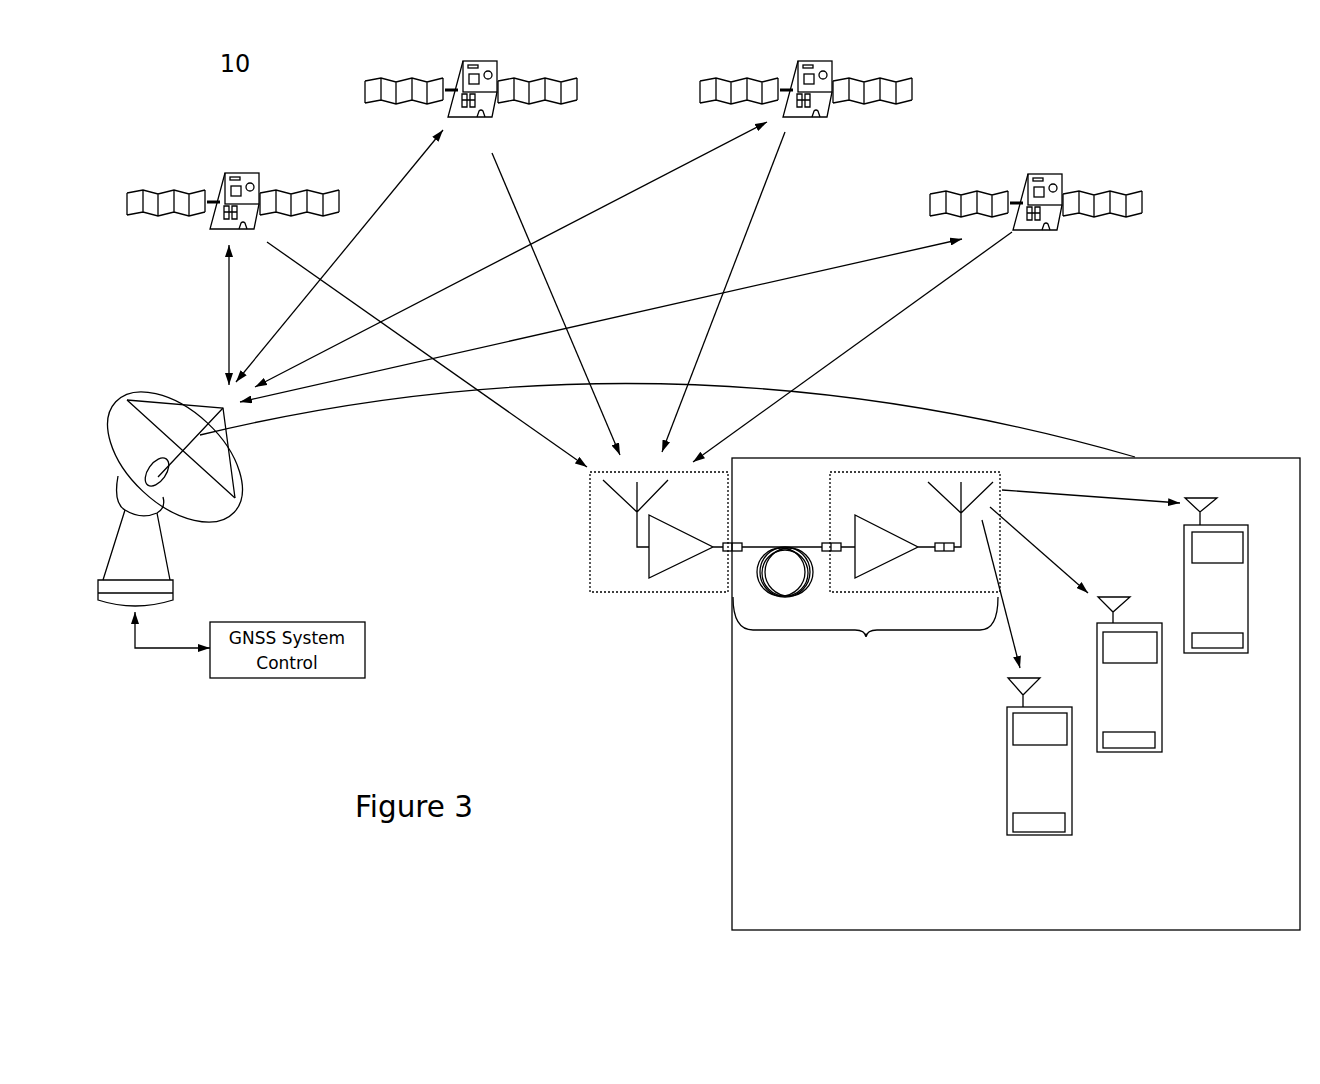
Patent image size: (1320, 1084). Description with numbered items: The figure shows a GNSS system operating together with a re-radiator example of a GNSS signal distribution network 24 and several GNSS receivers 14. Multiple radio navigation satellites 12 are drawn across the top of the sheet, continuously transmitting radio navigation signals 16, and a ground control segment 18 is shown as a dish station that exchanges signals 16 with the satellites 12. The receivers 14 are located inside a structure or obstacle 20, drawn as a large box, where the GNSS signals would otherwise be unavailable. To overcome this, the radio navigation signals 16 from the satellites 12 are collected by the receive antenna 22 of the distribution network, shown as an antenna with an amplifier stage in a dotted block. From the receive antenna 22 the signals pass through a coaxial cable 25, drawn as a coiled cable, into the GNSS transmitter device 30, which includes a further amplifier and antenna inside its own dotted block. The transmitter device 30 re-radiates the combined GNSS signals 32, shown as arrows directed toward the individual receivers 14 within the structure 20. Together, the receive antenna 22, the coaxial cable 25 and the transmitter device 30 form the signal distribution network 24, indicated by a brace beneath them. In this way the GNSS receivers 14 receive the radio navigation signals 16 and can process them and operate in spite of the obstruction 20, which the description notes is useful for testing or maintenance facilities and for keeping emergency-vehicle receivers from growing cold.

The radio navigation satellite 12 is at (487, 118).
The GNSS receiver 14 is at (1250, 655).
The radio navigation signal 16 is at (547, 287).
The ground control segment 18 is at (172, 562).
The structure or obstacle 20 is at (1205, 458).
The receive antenna 22 is at (588, 592).
The GNSS signal distribution network 24 is at (865, 633).
The coaxial cable 25 is at (793, 543).
The GNSS transmitter device 30 is at (828, 487).
The combined GNSS signals 32 is at (1095, 498).